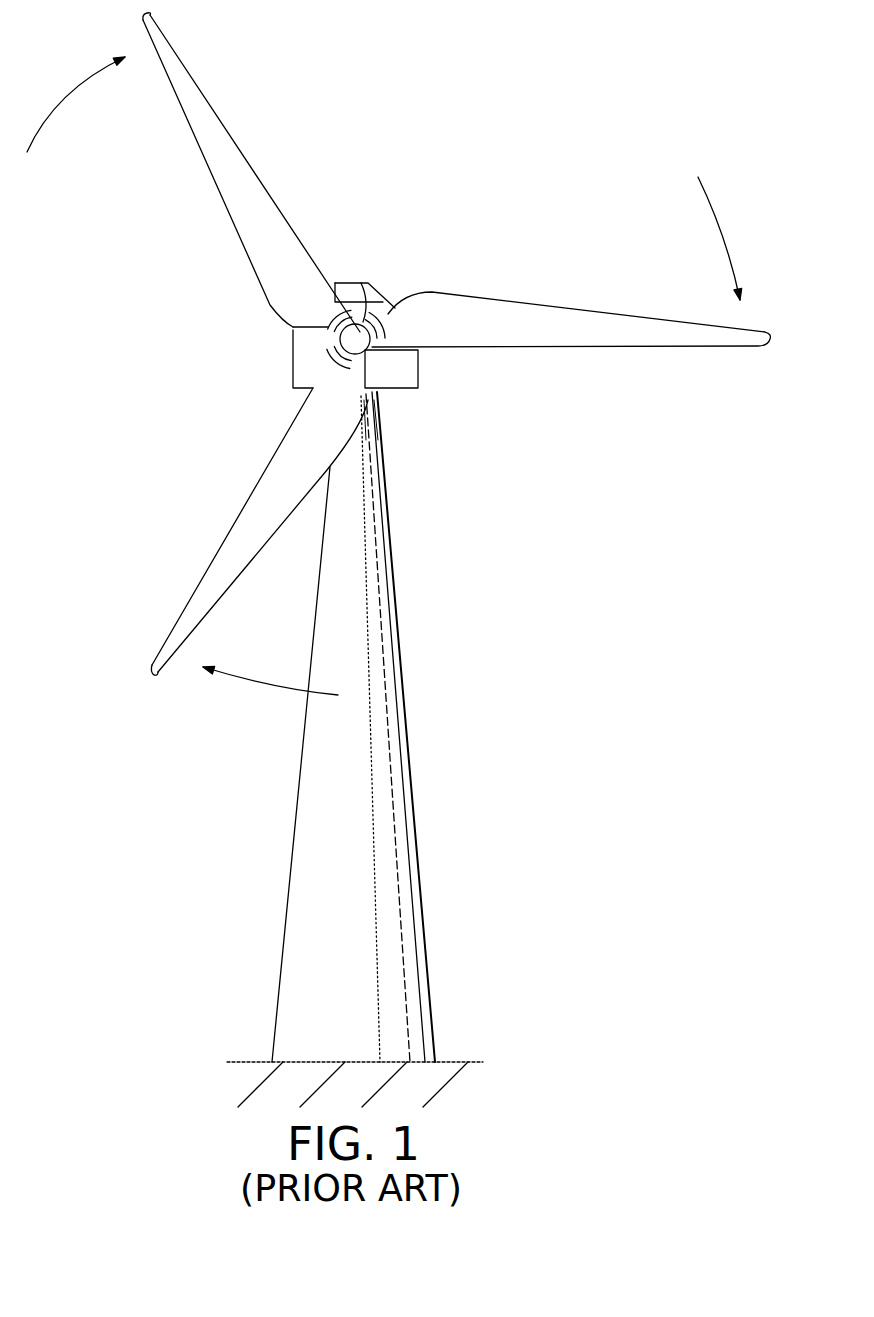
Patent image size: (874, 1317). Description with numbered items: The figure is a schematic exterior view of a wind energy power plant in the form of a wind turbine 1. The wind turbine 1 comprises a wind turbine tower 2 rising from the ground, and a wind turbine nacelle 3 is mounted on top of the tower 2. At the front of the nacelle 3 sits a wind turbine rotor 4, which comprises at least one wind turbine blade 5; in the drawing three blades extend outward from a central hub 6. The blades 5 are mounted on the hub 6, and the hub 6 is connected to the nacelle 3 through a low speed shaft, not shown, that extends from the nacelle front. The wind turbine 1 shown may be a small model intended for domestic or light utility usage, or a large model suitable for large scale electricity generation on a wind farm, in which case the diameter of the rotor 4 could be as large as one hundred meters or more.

The wind turbine 1 is at (398, 560).
The wind turbine tower 2 is at (412, 778).
The wind turbine nacelle 3 is at (418, 372).
The wind turbine rotor 4 is at (398, 354).
The wind turbine blade 5 is at (552, 313).
The hub 6 is at (357, 331).